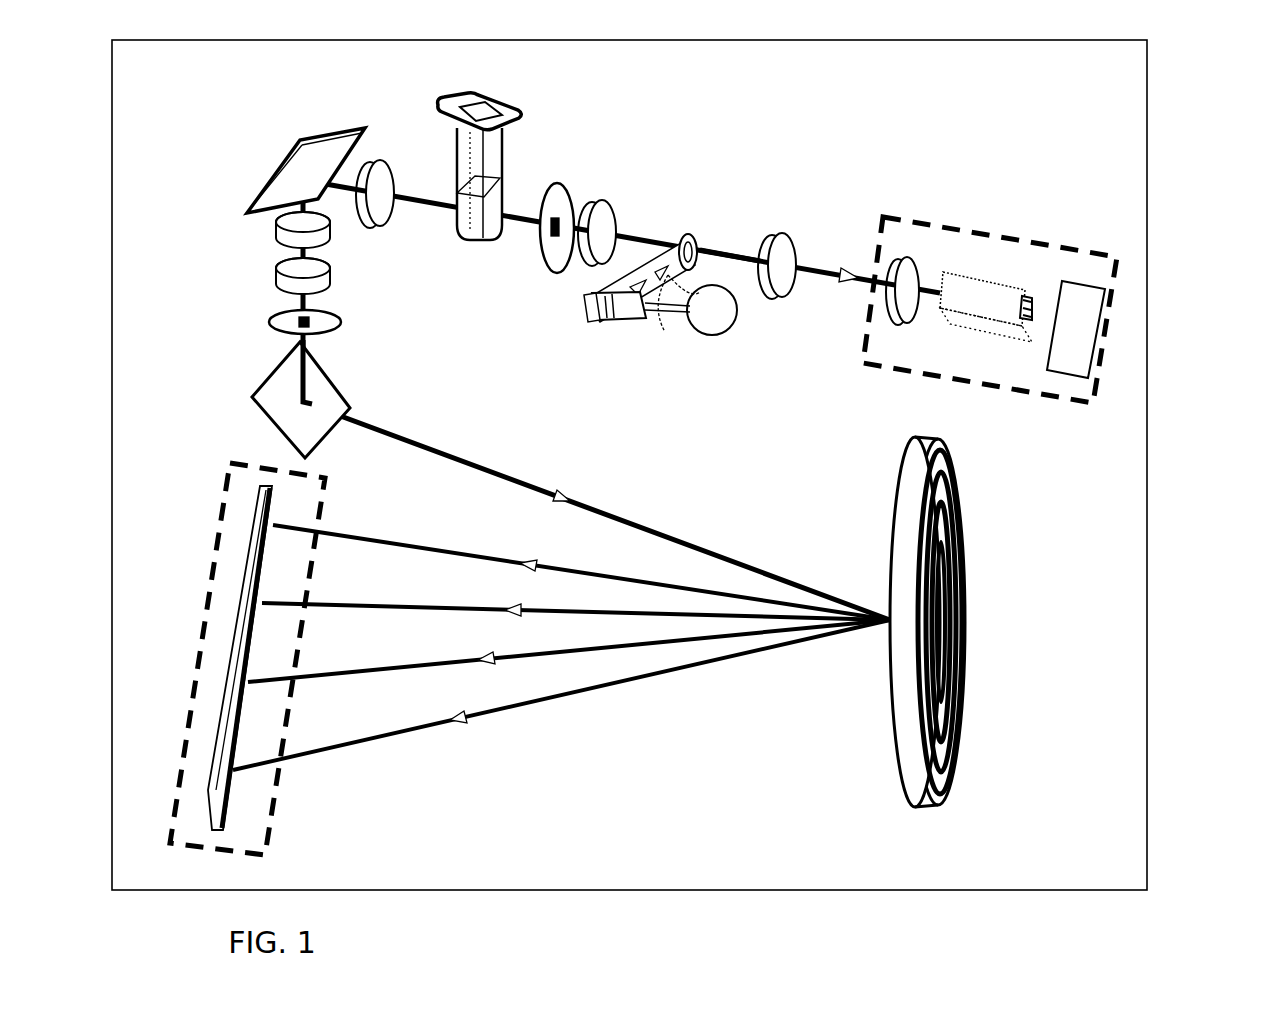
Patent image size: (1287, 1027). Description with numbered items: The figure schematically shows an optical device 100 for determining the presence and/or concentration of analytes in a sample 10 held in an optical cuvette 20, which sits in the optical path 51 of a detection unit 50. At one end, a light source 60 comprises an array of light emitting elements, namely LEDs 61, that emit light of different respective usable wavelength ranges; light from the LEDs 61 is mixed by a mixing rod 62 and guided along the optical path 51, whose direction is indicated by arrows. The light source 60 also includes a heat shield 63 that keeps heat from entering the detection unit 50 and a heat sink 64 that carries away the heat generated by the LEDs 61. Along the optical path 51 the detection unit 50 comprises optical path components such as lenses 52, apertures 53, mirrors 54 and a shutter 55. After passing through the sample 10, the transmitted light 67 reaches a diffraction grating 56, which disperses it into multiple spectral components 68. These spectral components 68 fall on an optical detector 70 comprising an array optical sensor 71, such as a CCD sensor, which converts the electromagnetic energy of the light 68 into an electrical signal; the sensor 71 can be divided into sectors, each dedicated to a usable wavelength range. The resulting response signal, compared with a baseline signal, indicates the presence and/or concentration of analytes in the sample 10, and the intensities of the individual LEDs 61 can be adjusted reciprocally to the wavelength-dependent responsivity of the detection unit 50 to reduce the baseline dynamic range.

The sample 10 is at (475, 242).
The optical cuvette 20 is at (440, 102).
The detection unit 50 is at (870, 126).
The optical path 51 is at (635, 520).
The lenses 52 is at (278, 223).
The apertures 53 is at (272, 320).
The mirrors 54 is at (283, 163).
The shutter 55 is at (684, 232).
The diffraction grating 56 is at (888, 742).
The light source 60 is at (1030, 402).
The LEDs 61 is at (1033, 302).
The mixing rod 62 is at (1003, 282).
The heat shield 63 is at (906, 257).
The heat sink 64 is at (1073, 382).
The light 67 is at (730, 262).
The spectral components 68 is at (552, 722).
The optical detector 70 is at (215, 538).
The array optical sensor 71 is at (235, 628).
The optical device 100 is at (1150, 630).